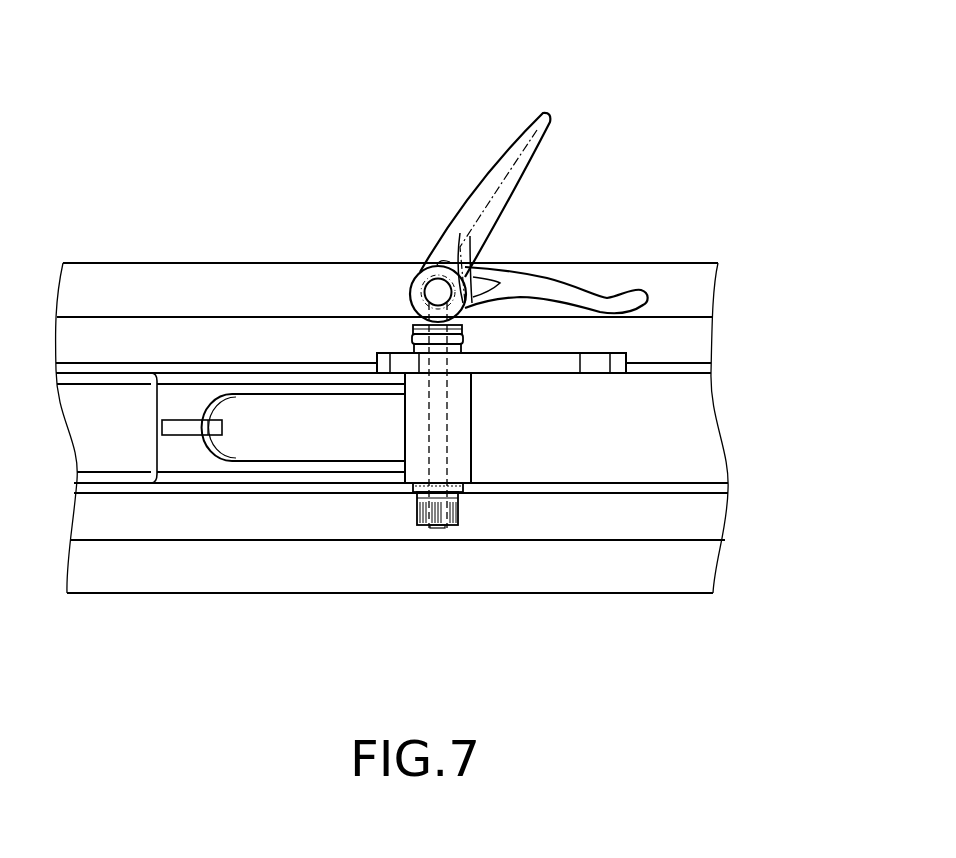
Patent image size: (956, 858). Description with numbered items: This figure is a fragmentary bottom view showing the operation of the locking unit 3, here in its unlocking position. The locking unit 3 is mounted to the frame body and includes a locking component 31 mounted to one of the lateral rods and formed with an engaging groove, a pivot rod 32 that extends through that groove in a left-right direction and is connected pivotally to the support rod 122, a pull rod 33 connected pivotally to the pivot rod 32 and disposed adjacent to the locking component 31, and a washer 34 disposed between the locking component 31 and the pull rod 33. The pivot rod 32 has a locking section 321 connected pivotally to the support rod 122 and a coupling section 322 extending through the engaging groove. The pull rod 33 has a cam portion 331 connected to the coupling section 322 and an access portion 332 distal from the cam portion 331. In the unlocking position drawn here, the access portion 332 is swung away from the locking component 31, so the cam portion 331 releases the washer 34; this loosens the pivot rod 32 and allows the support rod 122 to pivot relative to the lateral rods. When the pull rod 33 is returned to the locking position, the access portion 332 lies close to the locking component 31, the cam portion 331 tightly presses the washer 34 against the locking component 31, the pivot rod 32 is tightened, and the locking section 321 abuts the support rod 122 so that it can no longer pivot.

The locking unit 3 is at (260, 305).
The support rod 122 is at (235, 446).
The locking component 31 is at (548, 363).
The pivot rod 32 is at (428, 447).
The locking section 321 is at (423, 523).
The coupling section 322 is at (434, 287).
The pull rod 33 is at (543, 277).
The cam portion 331 is at (410, 310).
The access portion 332 is at (537, 130).
The washer 34 is at (410, 335).